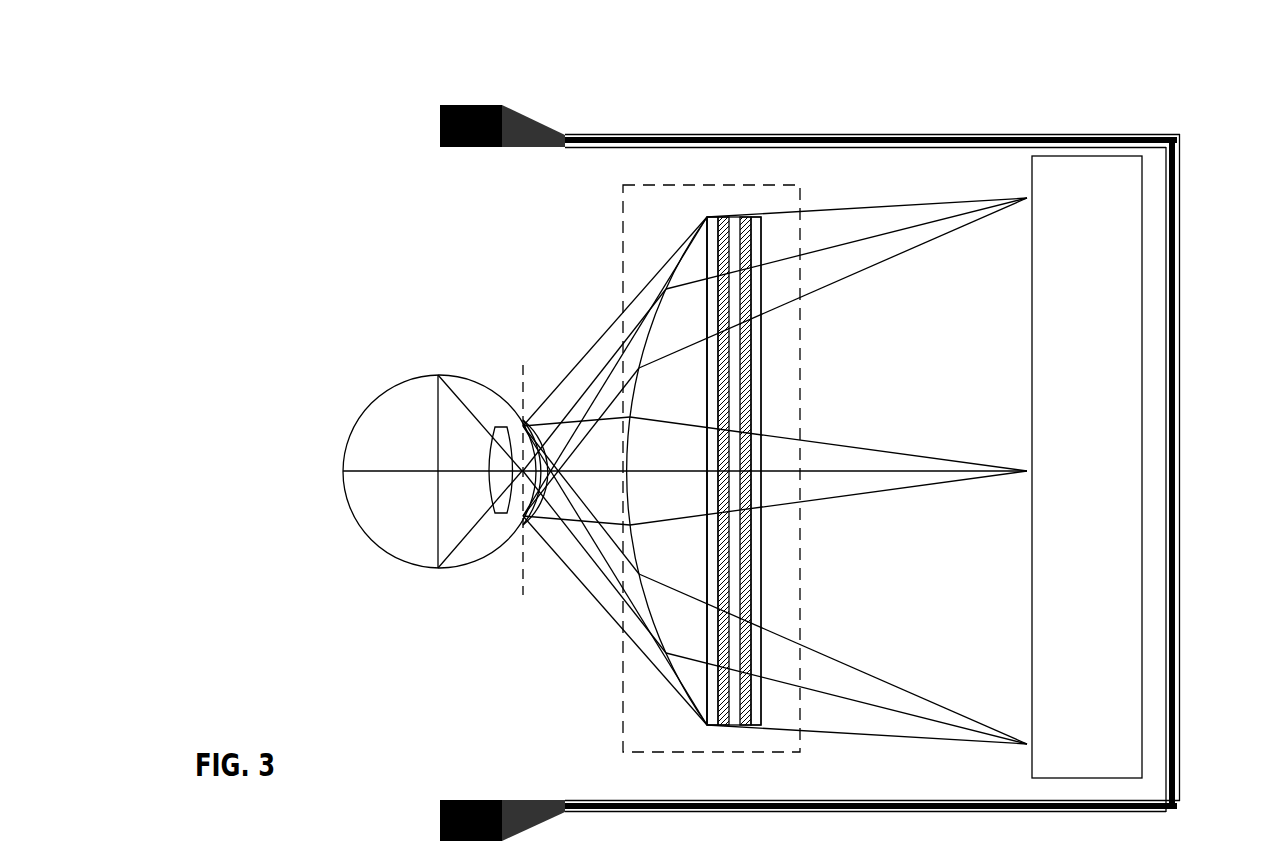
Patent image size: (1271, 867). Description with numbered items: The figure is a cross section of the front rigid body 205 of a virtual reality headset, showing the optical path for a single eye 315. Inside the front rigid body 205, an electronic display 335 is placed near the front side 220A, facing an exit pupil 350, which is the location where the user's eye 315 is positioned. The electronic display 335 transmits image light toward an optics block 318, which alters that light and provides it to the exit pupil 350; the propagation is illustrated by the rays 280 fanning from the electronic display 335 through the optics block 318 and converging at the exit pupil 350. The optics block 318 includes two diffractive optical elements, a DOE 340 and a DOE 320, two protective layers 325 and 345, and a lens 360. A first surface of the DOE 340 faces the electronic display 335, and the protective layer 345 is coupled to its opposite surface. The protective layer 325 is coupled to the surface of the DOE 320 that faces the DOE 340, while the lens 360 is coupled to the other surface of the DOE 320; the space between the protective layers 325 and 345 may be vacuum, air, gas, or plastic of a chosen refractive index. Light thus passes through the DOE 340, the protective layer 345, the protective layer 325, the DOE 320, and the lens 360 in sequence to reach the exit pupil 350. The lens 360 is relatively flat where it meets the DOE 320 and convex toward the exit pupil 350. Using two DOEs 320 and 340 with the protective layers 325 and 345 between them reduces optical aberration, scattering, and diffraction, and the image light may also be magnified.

The front rigid body 205 is at (372, 112).
The front side 220A is at (1179, 456).
The electronic display 335 is at (1087, 467).
The optics block 318 is at (622, 750).
The lens 360 is at (688, 262).
The diffractive optical element 320 is at (706, 216).
The protective layer 325 is at (718, 215).
The protective layer 345 is at (748, 215).
The diffractive optical element 340 is at (764, 226).
The eye 315 is at (461, 375).
The exit pupil 350 is at (514, 580).
The rays 280 is at (862, 273).